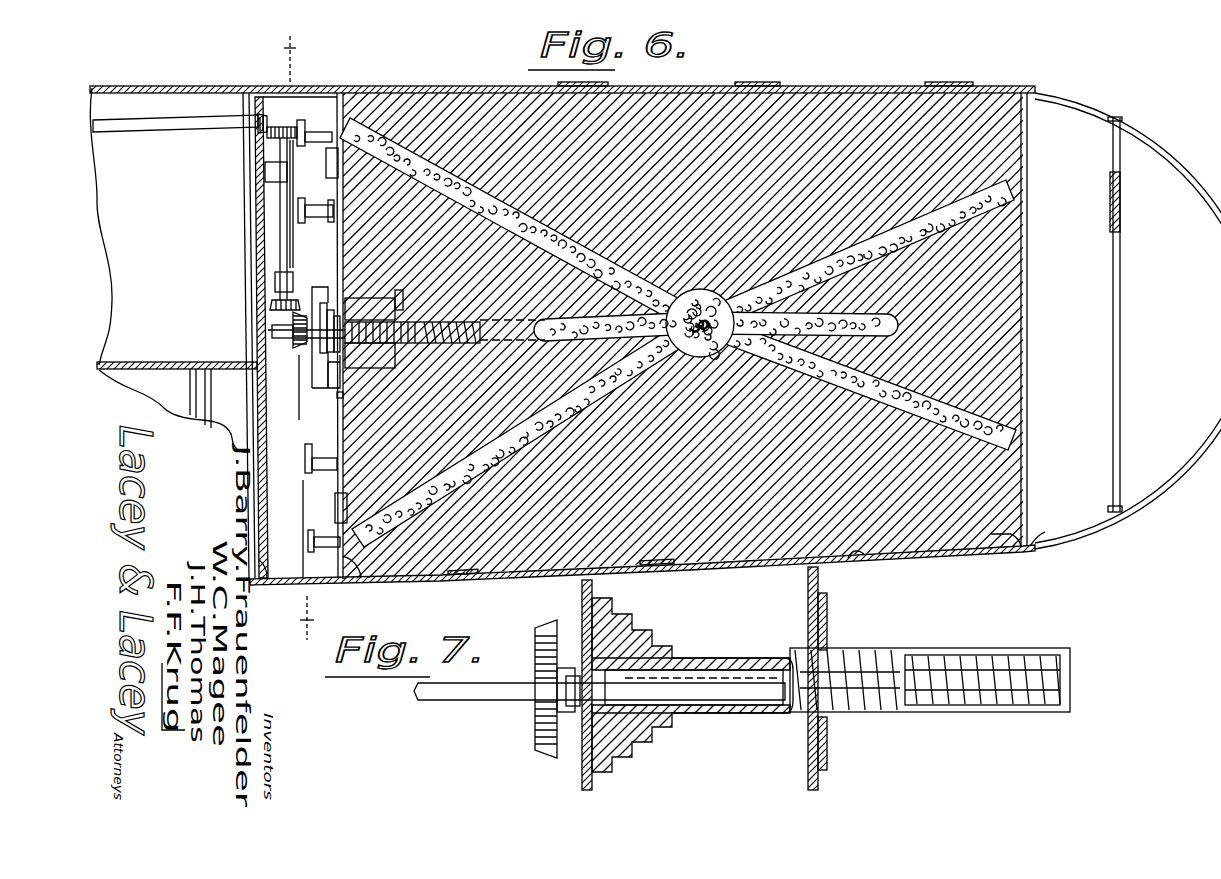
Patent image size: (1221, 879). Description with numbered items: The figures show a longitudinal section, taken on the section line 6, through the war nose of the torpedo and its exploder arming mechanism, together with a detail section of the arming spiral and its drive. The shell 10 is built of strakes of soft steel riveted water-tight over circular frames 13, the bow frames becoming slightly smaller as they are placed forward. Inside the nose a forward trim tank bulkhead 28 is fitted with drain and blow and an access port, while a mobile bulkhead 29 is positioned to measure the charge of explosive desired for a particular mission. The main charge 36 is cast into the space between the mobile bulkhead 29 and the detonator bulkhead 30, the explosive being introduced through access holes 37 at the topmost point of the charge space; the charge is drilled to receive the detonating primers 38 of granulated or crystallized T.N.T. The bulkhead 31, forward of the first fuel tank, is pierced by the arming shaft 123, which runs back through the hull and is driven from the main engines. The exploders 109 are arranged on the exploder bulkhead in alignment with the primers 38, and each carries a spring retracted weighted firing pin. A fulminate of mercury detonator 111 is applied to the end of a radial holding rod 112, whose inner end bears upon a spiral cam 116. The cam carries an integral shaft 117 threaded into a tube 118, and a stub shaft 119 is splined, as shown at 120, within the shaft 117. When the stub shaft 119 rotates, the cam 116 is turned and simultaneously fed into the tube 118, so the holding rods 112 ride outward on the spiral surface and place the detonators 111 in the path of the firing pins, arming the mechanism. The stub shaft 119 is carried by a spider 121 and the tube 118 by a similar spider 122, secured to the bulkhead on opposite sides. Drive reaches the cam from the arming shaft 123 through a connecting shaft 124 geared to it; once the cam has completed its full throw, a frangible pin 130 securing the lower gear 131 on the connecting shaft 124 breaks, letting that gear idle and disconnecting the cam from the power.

In FIG. 6, the section line 6 is at (298, 339).
In FIG. 6, the shell 10 is at (966, 552).
In FIG. 6, the frames 13 is at (256, 298).
In FIG. 6, the forward trim tank bulkhead 28 is at (1121, 465).
In FIG. 6, the mobile bulkhead 29 is at (1048, 548).
In FIG. 6, the detonator bulkhead 30 is at (360, 582).
In FIG. 6, the bulkhead 31 is at (266, 569).
In FIG. 6, the main charge 36 is at (893, 108).
In FIG. 6, the access holes 37 is at (760, 86).
In FIG. 6, the detonating primers 38 is at (1005, 220).
In FIG. 6, the exploders 109 is at (312, 132).
In FIG. 6, the fulminate of mercury detonator 111 is at (326, 160).
In FIG. 6, the radial holding rod 112 is at (338, 397).
In FIG. 6, the spiral cam 116 is at (326, 296).
In FIG. 7, the spiral cam 116 is at (650, 631).
In FIG. 7, the shaft 117 is at (790, 660).
In FIG. 7, the tube 118 is at (920, 650).
In FIG. 7, the stub shaft 119 is at (712, 701).
In FIG. 7, the spline 120 is at (690, 660).
In FIG. 6, the spider 121 is at (312, 300).
In FIG. 6, the spider 122 is at (445, 329).
In FIG. 6, the arming shaft 123 is at (178, 132).
In FIG. 6, the connecting shaft 124 is at (280, 226).
In FIG. 6, the frangible pin 130 is at (272, 309).
In FIG. 6, the lower gear 131 is at (272, 334).